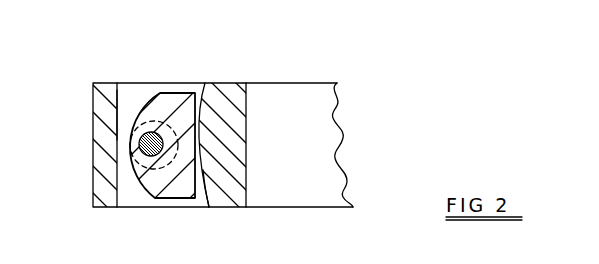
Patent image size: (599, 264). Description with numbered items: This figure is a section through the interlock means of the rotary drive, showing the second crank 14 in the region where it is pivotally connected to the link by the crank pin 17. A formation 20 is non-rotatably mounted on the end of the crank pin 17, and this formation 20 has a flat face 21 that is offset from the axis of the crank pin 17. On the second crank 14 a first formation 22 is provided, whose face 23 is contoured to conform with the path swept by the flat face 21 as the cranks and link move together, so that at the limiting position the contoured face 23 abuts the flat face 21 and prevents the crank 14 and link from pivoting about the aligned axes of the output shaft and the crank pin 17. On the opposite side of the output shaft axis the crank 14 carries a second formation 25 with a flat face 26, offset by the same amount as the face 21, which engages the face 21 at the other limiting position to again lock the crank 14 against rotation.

The second crank 14 is at (325, 93).
The second formation 25 is at (101, 153).
The flat face 26 is at (117, 98).
The formation 20 is at (160, 96).
The crank pin 17 is at (144, 154).
The first formation 22 is at (235, 193).
The contoured face 23 is at (197, 126).
The flat face 21 is at (200, 189).